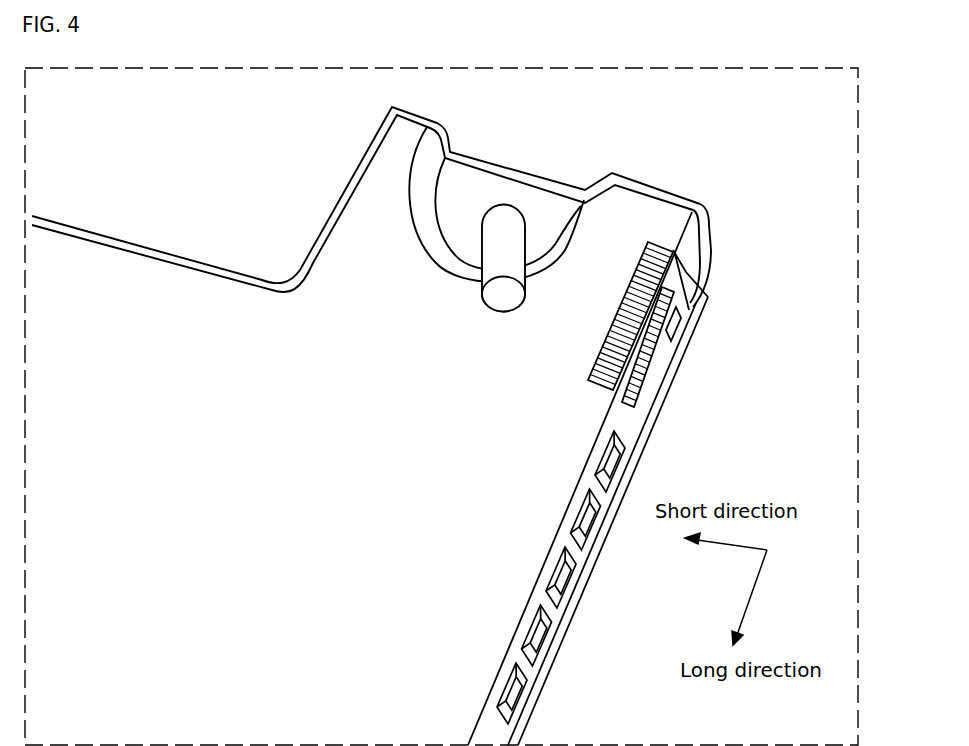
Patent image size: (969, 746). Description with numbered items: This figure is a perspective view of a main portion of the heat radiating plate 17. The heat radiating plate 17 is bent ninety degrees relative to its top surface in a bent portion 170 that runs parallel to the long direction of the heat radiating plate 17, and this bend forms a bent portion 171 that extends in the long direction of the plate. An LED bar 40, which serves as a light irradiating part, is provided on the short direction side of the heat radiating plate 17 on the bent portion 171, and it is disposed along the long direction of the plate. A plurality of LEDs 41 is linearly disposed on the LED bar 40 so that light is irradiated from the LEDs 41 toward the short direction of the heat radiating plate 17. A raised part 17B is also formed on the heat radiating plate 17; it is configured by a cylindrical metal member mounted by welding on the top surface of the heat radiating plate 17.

The heat radiating plate 17 is at (426, 207).
The raised part 17B is at (513, 245).
The bent portion 170 is at (703, 207).
The bent portion 171 is at (710, 268).
The LED bar 40 is at (630, 423).
The LED 41 is at (600, 450).